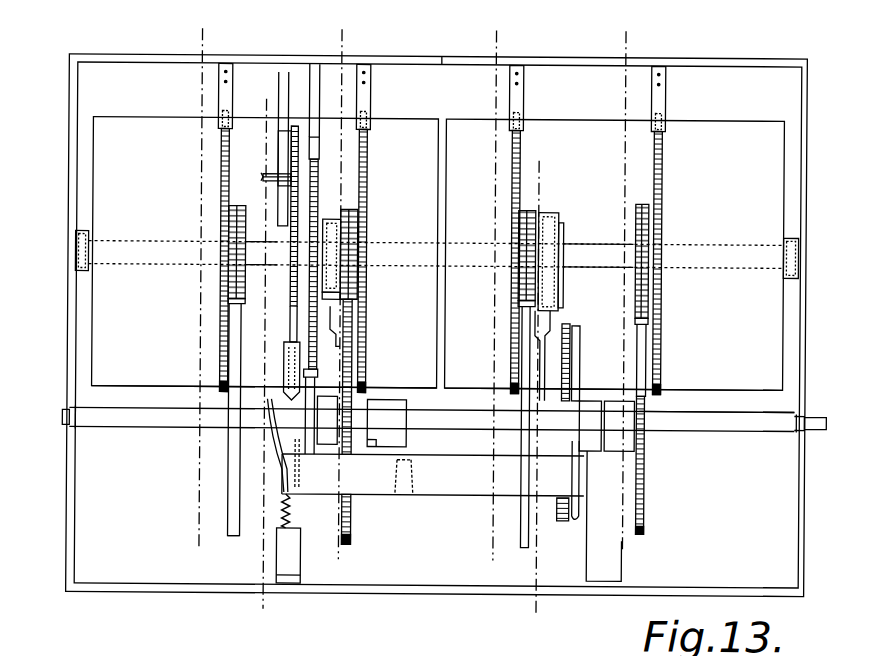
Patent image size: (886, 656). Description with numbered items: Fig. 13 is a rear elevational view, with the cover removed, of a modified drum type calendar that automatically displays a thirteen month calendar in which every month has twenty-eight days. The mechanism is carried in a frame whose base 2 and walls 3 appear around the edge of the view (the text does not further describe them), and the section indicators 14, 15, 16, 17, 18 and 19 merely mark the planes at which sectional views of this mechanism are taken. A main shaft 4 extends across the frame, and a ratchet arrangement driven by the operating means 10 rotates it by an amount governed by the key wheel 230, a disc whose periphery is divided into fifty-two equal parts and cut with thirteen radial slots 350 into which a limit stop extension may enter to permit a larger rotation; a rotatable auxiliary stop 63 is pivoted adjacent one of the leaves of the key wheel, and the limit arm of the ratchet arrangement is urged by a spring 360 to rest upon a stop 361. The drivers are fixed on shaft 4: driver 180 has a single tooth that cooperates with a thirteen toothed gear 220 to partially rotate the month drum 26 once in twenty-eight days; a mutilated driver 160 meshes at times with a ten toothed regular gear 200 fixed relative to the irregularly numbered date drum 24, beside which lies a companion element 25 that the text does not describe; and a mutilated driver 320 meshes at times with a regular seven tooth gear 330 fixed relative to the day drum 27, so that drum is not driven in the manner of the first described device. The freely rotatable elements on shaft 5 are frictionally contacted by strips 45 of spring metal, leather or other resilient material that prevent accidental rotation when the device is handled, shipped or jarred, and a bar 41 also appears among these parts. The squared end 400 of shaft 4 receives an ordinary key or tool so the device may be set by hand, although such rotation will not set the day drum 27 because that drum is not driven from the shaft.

The base frame 2 is at (113, 594).
The frame side wall 3 is at (118, 56).
The shaft 4 is at (159, 429).
The shaft 5 is at (78, 275).
The operating means 10 is at (417, 497).
The section line 14 is at (544, 185).
The section line 15 is at (267, 123).
The driver 16 is at (214, 45).
The section line 17 is at (350, 50).
The driver 18 is at (504, 47).
The section line 19 is at (637, 48).
The irregularly numbered drum 24 is at (463, 388).
The partition wall 25 is at (421, 388).
The drum 26 is at (122, 404).
The drum 27 is at (718, 395).
The slide bar 41 is at (283, 125).
The strips of resilient material 45 is at (231, 110).
The rotatable auxiliary stop 63 is at (277, 157).
The mutilated driver 160 is at (526, 548).
The driver 180 is at (236, 538).
The ten toothed regular gear 200 is at (516, 222).
The thirteen toothed gear 220 is at (228, 214).
The key wheel 230 is at (297, 128).
The mutilated driver 320 is at (645, 492).
The regular seven tooth gear 330 is at (648, 208).
The radial slots 350 is at (317, 167).
The spring 360 is at (291, 512).
The stop 361 is at (302, 546).
The squared end 400 is at (815, 415).